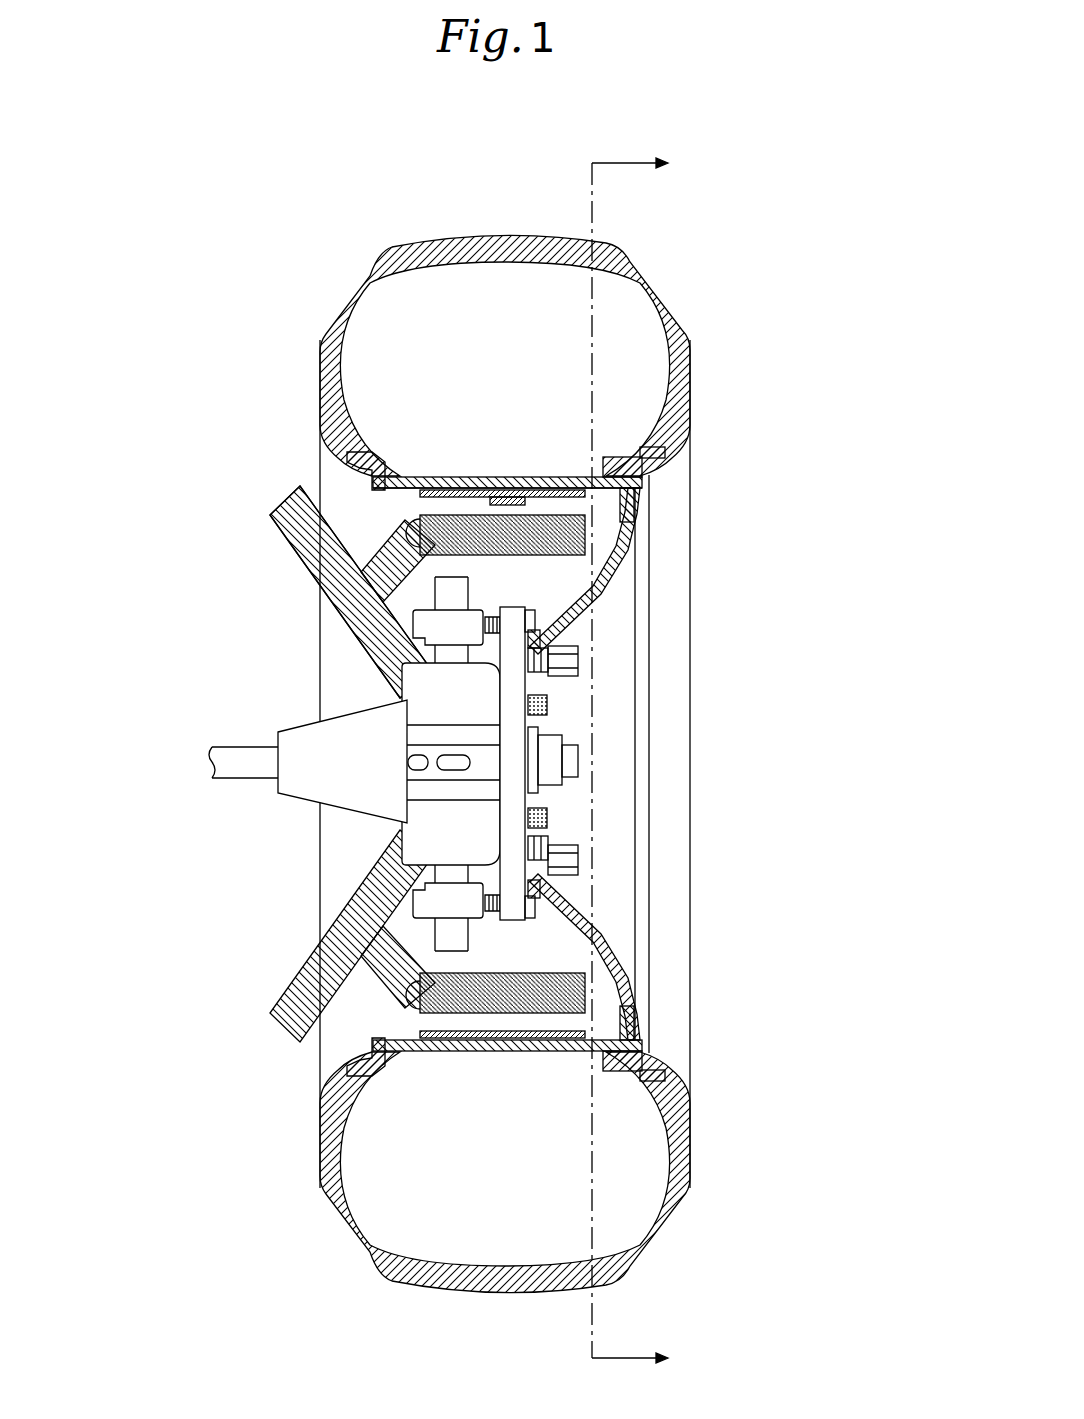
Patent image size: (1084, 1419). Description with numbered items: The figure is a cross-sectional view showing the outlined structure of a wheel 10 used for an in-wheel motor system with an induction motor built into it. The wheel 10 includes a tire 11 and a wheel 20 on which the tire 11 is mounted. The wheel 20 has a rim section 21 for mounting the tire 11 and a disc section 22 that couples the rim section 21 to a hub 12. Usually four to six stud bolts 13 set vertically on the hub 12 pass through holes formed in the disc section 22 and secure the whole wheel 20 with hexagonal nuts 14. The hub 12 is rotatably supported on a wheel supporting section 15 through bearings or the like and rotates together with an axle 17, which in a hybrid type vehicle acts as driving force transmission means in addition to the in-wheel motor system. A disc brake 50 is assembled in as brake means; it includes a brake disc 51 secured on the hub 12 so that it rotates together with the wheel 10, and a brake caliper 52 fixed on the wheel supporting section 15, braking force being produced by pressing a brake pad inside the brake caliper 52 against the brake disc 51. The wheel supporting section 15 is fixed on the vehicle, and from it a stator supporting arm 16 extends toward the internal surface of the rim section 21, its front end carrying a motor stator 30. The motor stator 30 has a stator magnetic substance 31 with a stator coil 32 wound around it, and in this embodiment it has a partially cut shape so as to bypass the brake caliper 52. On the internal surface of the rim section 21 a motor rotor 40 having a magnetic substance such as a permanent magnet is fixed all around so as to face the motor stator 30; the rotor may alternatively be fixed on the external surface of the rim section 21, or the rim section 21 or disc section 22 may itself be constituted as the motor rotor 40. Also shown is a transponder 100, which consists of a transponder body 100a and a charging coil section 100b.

The wheel 10 is at (327, 222).
The tire 11 is at (320, 352).
The transponder 100 is at (463, 507).
The transponder body 100a is at (570, 485).
The charging coil section 100b is at (515, 485).
The rim section 21 is at (600, 462).
The motor rotor 40 is at (633, 507).
The disc section 22 is at (645, 523).
The wheel 20 is at (648, 588).
The hexagonal nuts 14 is at (556, 645).
The stud bolts 13 is at (578, 663).
The hub 12 is at (547, 707).
The brake caliper 52 is at (483, 807).
The brake disc 51 is at (470, 940).
The motor stator 30 is at (598, 998).
The stator coil 32 is at (405, 995).
The stator magnetic substance 31 is at (425, 1034).
The disc brake 50 is at (380, 832).
The axle 17 is at (308, 750).
The wheel supporting section 15 is at (317, 587).
The stator supporting arm 16 is at (393, 560).